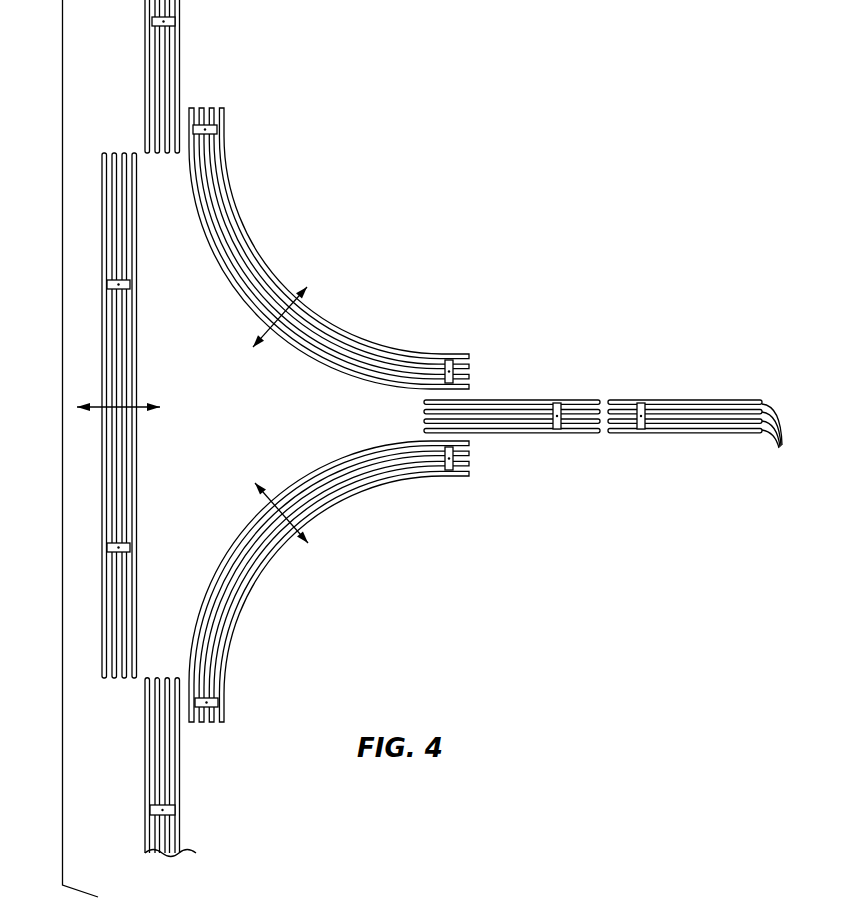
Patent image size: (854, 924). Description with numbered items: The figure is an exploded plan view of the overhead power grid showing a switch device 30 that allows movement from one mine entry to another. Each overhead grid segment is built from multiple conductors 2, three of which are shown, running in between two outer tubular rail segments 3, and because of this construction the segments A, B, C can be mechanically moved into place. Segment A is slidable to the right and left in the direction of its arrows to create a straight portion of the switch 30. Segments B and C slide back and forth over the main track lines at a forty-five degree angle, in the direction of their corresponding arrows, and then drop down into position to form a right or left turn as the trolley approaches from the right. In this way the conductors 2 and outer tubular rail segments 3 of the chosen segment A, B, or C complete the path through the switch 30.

The switch device 30 is at (62, 358).
The outer tubular rail segments 3 is at (662, 399).
The conductors 2 is at (782, 448).
The segment A is at (139, 405).
The segment B is at (297, 295).
The segment C is at (296, 521).